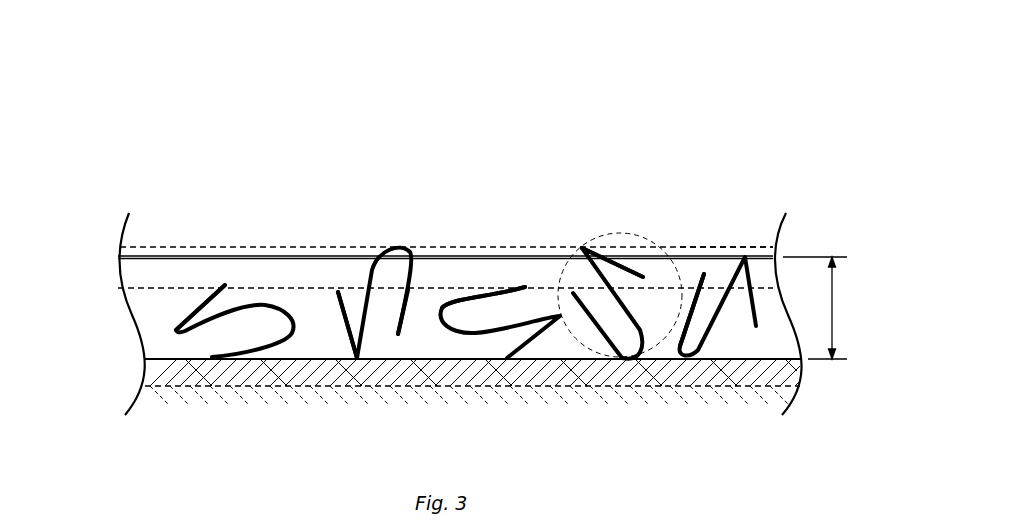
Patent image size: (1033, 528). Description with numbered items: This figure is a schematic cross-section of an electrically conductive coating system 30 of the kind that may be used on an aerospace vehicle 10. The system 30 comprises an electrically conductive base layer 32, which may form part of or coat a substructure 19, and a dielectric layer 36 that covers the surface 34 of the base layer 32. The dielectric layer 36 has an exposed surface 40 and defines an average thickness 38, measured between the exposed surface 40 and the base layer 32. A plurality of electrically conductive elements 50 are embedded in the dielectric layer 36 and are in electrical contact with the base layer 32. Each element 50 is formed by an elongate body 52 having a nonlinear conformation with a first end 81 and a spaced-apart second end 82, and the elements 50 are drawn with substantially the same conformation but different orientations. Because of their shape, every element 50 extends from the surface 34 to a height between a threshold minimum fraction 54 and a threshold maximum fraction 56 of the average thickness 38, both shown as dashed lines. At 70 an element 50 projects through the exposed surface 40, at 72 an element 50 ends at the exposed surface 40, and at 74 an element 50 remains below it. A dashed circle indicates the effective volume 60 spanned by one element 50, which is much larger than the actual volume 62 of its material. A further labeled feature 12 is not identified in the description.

The aerospace vehicle 10 is at (150, 37).
The topsheet 12 is at (152, 97).
The substructure 19 is at (637, 403).
The electrically conductive coating system 30 is at (213, 130).
The electrically conductive base layer 32 is at (483, 375).
The surface 34 is at (280, 354).
The dielectric layer 36 is at (165, 322).
The average thickness 38 is at (834, 313).
The exposed surface 40 is at (238, 257).
The electrically conductive elements 50 is at (340, 333).
The elongate body 52 is at (212, 322).
The threshold minimum fraction 54 is at (150, 288).
The threshold maximum fraction 56 is at (142, 247).
The effective volume 60 is at (607, 232).
The actual volume 62 is at (635, 266).
The element projecting through exposed surface 70 is at (368, 232).
The element ending at exposed surface 72 is at (727, 243).
The element not contacting exposed surface 74 is at (178, 272).
The first end 81 is at (335, 290).
The second end 82 is at (395, 338).